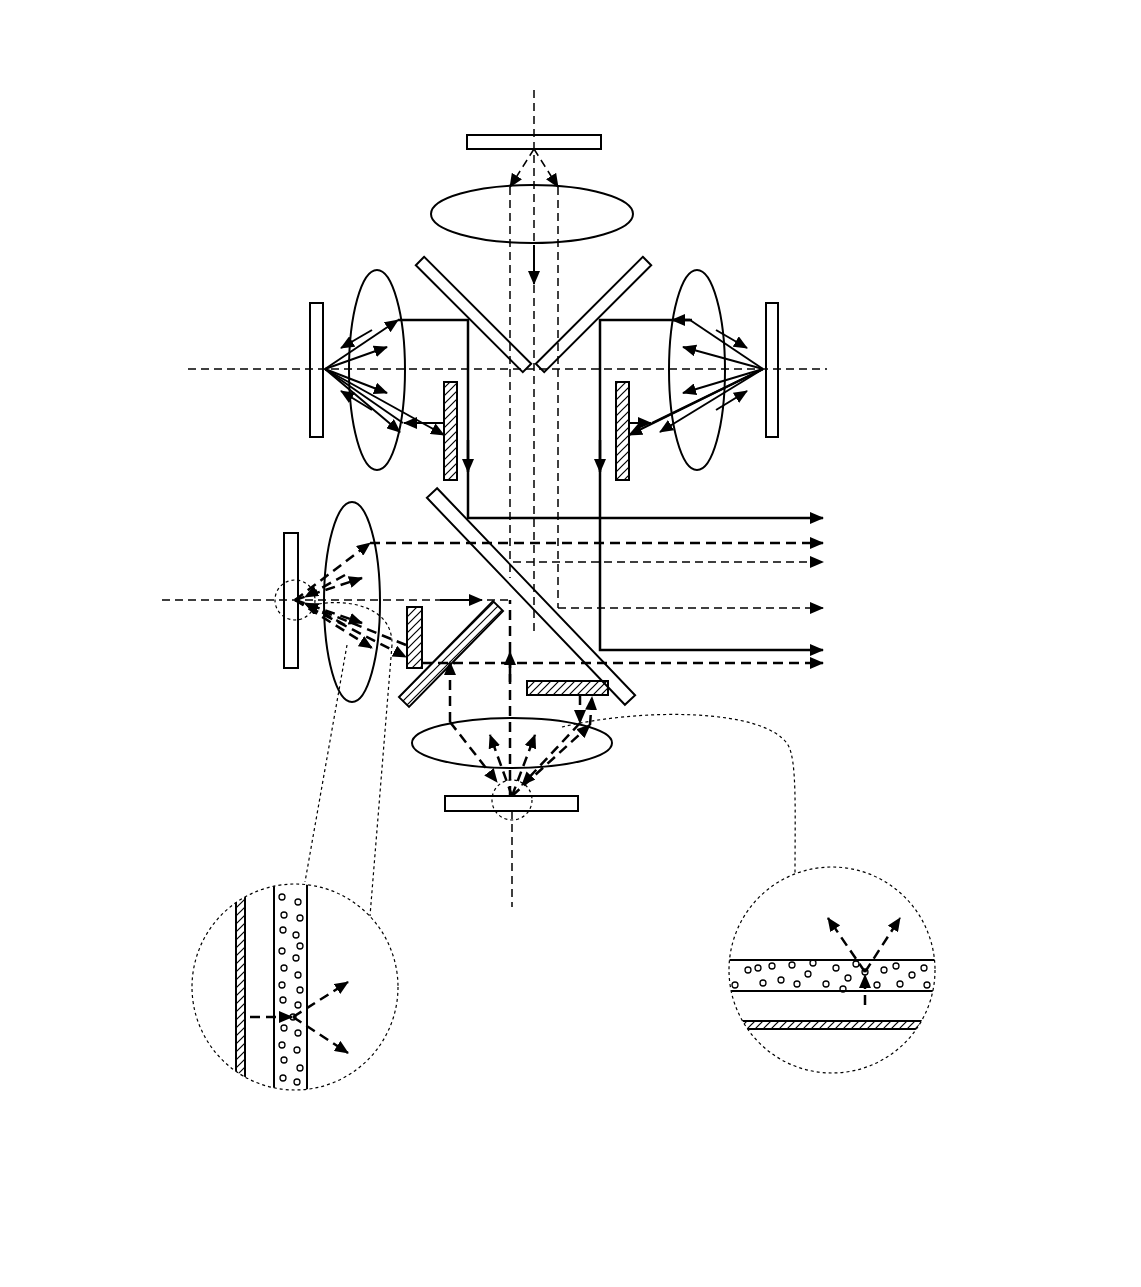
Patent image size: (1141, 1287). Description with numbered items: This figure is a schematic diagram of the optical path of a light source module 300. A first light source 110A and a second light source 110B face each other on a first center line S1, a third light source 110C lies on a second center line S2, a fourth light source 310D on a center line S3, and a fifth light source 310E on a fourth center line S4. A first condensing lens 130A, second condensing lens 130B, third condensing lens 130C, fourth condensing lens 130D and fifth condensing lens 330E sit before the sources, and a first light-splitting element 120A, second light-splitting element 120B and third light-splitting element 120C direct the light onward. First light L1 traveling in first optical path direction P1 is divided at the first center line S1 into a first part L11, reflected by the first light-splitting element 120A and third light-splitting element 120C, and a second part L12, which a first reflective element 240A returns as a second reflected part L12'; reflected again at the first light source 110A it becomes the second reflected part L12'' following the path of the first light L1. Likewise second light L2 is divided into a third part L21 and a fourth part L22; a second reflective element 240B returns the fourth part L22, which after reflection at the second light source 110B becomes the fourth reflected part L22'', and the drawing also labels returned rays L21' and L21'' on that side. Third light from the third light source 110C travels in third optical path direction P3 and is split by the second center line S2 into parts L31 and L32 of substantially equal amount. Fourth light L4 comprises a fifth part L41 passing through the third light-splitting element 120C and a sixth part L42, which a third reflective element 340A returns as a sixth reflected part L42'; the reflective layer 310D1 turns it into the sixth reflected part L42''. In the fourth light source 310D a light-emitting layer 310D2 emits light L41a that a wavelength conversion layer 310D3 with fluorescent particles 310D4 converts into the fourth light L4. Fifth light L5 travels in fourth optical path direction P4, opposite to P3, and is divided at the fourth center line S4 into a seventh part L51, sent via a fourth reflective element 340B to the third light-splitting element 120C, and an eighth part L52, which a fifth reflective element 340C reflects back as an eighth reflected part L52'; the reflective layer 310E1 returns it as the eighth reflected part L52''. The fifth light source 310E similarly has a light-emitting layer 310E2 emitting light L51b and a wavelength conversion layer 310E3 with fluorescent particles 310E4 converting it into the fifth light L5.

The light source module 300 is at (355, 82).
The first light source 110A is at (310, 427).
The second light source 110B is at (780, 415).
The third light source 110C is at (470, 135).
The first condensing lens 130A is at (377, 270).
The second condensing lens 130B is at (697, 270).
The third condensing lens 130C is at (462, 190).
The fourth condensing lens 130D is at (347, 702).
The first light-splitting element 120A is at (420, 258).
The second light-splitting element 120B is at (648, 258).
The third light-splitting element 120C is at (633, 688).
The first reflective element 240A is at (445, 481).
The second reflective element 240B is at (622, 481).
The third reflective element 340A is at (430, 607).
The fourth reflective element 340B is at (428, 692).
The fifth reflective element 340C is at (606, 697).
The fifth condensing lens 330E is at (612, 743).
The fourth light source 310D is at (284, 653).
The reflective layer 310D1 is at (243, 1072).
The light-emitting layer 310D2 is at (262, 1073).
The wavelength conversion layer 310D3 is at (290, 1088).
The fluorescent particles 310D4 is at (301, 1071).
The fifth light source 310E is at (578, 804).
The reflective layer 310E1 is at (752, 1033).
The light-emitting layer 310E2 is at (752, 1025).
The wavelength conversion layer 310E3 is at (753, 1005).
The fluorescent particle 310E4 is at (745, 970).
The first center line S1 is at (488, 369).
The second center line S2 is at (534, 347).
The center line S3 is at (320, 600).
The fourth center line S4 is at (512, 874).
The first optical path direction P1 is at (461, 585).
The third optical path direction P3 is at (537, 264).
The fourth optical path direction P4 is at (494, 698).
The first light L1 is at (232, 259).
The first part L11 is at (380, 320).
The second part L12 is at (336, 375).
The second reflected part L12' is at (339, 438).
The second reflected part L12'' is at (288, 370).
The second light L2 is at (864, 262).
The third part L21 is at (735, 459).
The reflected first component of second light L21' is at (711, 432).
The re-reflected first component of second light L21'' is at (793, 392).
The fourth part L22 is at (748, 366).
The fourth reflected part L22'' is at (795, 347).
The part of third light L31 is at (552, 165).
The part of third light L32 is at (512, 168).
The fourth light L4 is at (445, 1045).
The fifth part L41 is at (310, 578).
The light L41a is at (268, 1015).
The sixth part L42 is at (326, 860).
The sixth reflected part L42' is at (301, 649).
The sixth reflected part L42'' is at (262, 602).
The fifth light L5 is at (597, 988).
The seventh part L51 is at (800, 664).
The light L51b is at (872, 1000).
The eighth part L52 is at (712, 846).
The eighth reflected part L52' is at (570, 792).
The eighth reflected part L52'' is at (515, 811).